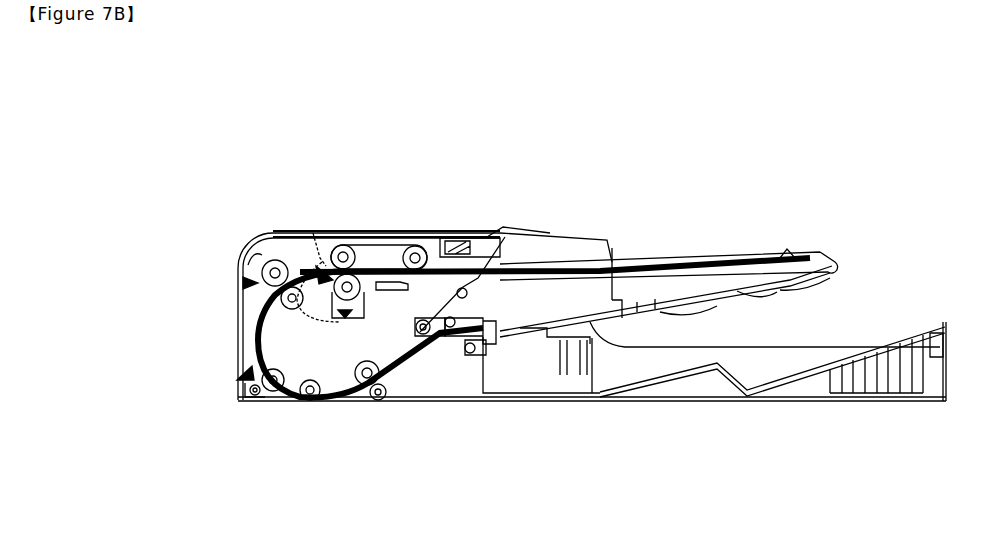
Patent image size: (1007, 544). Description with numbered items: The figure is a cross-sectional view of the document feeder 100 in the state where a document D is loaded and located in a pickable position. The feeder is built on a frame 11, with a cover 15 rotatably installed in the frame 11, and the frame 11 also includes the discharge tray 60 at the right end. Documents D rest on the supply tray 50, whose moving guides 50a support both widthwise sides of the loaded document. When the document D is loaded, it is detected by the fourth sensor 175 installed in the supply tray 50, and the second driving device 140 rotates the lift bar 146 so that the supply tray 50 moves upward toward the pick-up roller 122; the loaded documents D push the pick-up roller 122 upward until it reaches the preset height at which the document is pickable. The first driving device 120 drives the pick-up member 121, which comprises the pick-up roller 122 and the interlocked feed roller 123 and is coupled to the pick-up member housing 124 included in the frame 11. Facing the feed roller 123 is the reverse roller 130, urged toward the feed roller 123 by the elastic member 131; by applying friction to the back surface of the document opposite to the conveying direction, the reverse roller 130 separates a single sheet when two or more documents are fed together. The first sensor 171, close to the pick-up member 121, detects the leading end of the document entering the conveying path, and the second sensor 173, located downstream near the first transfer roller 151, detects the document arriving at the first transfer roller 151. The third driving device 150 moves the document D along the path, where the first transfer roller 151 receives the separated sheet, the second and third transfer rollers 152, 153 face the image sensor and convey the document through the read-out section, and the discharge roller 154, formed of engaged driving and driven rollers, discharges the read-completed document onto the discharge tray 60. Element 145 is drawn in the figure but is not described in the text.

The document feeder 100 is at (222, 163).
The first driving device 120 is at (437, 127).
The pick-up member 121 is at (425, 170).
The feed roller 123 is at (335, 245).
The pick-up member housing 124 is at (371, 245).
The pick-up roller 122 is at (421, 245).
The cover 15 is at (470, 240).
The fourth sensor 175 is at (505, 237).
The first sensor 171 is at (313, 233).
The frame 11 is at (238, 233).
The elastic member 131 is at (268, 262).
The reverse roller 130 is at (308, 250).
The second sensor 173 is at (240, 268).
The third driving device 150 is at (150, 386).
The first transfer roller 151 is at (243, 283).
The discharge roller 154 is at (256, 336).
The second transfer roller 152 is at (240, 364).
The third transfer roller 153 is at (250, 392).
The second driving device 140 is at (470, 477).
The discharge roller 145 is at (445, 352).
The lift bar 146 is at (455, 352).
The document D is at (725, 262).
The moving guides 50a is at (585, 262).
The supply tray 50 is at (805, 298).
The discharge tray 60 is at (895, 340).